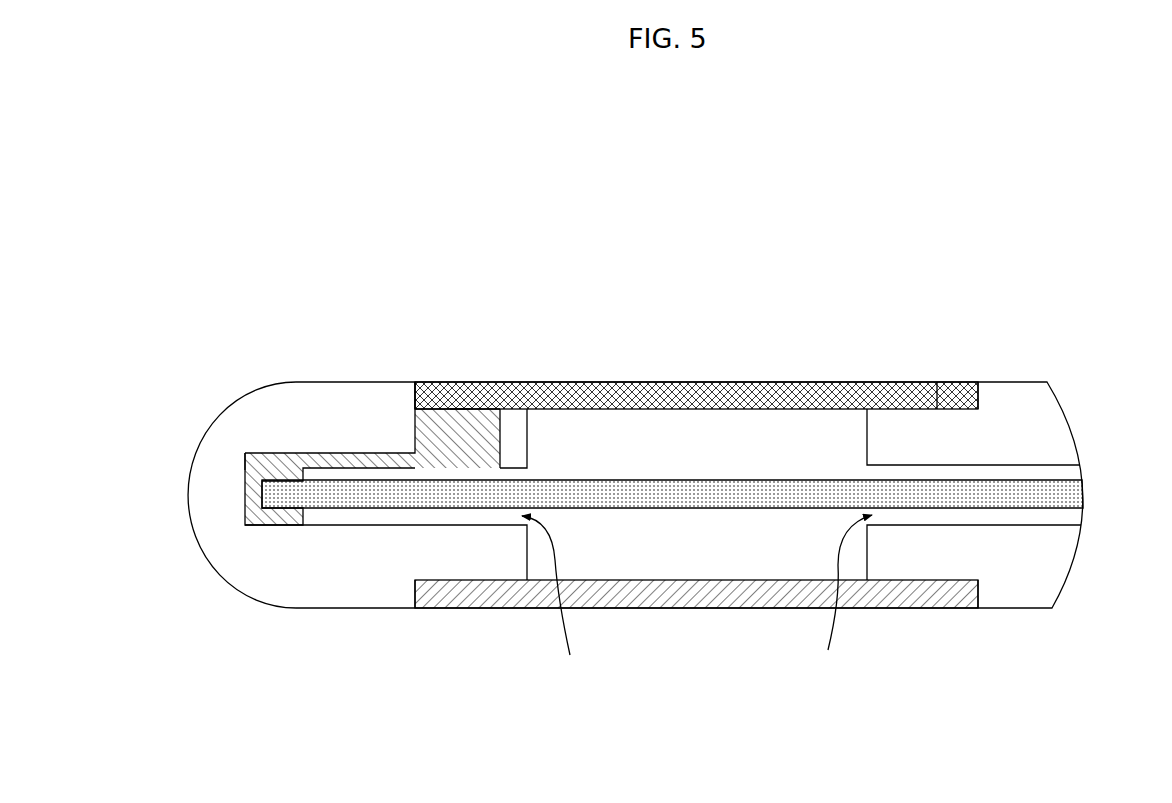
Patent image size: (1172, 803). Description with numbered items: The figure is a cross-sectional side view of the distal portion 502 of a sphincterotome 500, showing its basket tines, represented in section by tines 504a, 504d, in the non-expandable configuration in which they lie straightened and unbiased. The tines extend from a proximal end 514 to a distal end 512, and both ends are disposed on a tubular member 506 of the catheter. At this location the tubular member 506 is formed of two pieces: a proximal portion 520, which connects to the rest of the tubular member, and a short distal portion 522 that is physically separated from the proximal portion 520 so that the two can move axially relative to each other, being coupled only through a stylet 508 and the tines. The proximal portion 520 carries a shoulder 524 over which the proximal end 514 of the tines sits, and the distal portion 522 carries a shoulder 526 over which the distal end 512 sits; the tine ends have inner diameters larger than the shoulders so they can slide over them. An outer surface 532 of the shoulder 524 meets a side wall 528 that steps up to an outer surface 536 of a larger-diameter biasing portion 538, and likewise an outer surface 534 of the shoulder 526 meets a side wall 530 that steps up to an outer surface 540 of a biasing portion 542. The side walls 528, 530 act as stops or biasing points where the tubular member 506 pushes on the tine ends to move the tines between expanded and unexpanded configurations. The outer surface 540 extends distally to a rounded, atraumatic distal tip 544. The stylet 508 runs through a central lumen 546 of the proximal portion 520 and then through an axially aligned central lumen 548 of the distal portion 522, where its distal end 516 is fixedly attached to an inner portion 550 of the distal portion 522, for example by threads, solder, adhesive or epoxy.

The sphincterotome 500 is at (244, 115).
The distal portion 502 is at (703, 248).
The tine 504a is at (712, 382).
The tine 504d is at (712, 608).
The tubular member 506 is at (372, 567).
The stylet 508 is at (783, 492).
The distal end 512 is at (480, 395).
The proximal end 514 is at (910, 437).
The distal end 516 is at (280, 497).
The proximal portion 520 is at (993, 392).
The distal portion 522 is at (287, 412).
The shoulder 524 is at (915, 395).
The shoulder 526 is at (513, 440).
The side wall 528 is at (968, 380).
The side wall 530 is at (437, 383).
The outer surface 532 is at (935, 384).
The outer surface 534 is at (458, 408).
The outer surface 536 is at (1048, 392).
The biasing portion 538 is at (1013, 392).
The outer surface 540 is at (370, 382).
The biasing portion 542 is at (338, 412).
The distal tip 544 is at (188, 498).
The central lumen 546 is at (841, 594).
The central lumen 548 is at (555, 598).
The inner portion 550 is at (250, 455).